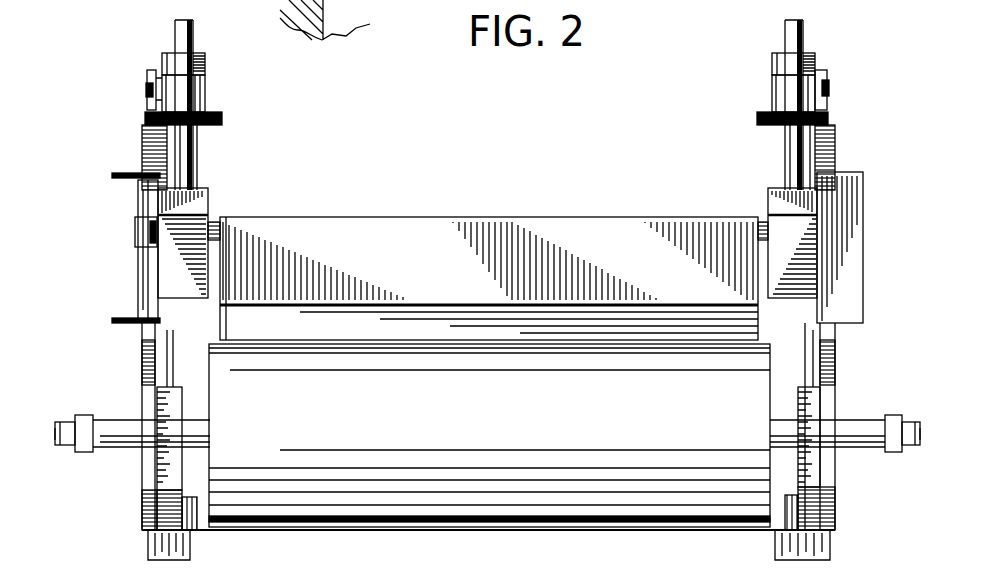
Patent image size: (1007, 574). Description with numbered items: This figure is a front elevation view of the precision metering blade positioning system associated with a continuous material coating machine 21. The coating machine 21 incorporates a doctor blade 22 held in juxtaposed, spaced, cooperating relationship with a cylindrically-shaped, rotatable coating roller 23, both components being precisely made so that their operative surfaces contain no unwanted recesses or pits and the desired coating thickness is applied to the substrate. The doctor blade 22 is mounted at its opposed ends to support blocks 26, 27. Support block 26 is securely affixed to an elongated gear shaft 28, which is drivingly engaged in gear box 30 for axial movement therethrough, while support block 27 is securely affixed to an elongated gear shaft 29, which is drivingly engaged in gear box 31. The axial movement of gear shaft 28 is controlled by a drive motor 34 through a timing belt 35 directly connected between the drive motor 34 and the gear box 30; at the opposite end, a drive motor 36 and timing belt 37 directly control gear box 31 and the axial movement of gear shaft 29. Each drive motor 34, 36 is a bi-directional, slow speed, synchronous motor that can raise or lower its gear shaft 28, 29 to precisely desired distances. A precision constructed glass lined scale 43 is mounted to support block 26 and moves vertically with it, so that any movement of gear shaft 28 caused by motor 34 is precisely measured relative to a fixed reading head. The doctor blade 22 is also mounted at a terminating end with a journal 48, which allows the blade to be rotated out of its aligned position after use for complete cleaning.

The coating machine 21 is at (805, 545).
The doctor blade 22 is at (550, 217).
The coating roller 23 is at (403, 421).
The support block 26 is at (206, 188).
The support block 27 is at (780, 190).
The gear shaft 28 is at (178, 26).
The gear shaft 29 is at (790, 42).
The gear box 30 is at (206, 93).
The gear box 31 is at (782, 95).
The drive motor 34 is at (200, 57).
The timing belt 35 is at (153, 74).
The drive motor 36 is at (812, 55).
The timing belt 37 is at (828, 78).
The glass lined scale 43 is at (140, 270).
The journal 48 is at (135, 228).